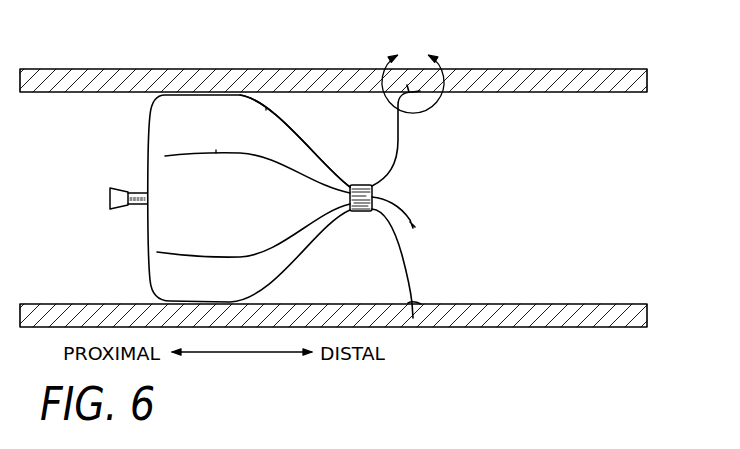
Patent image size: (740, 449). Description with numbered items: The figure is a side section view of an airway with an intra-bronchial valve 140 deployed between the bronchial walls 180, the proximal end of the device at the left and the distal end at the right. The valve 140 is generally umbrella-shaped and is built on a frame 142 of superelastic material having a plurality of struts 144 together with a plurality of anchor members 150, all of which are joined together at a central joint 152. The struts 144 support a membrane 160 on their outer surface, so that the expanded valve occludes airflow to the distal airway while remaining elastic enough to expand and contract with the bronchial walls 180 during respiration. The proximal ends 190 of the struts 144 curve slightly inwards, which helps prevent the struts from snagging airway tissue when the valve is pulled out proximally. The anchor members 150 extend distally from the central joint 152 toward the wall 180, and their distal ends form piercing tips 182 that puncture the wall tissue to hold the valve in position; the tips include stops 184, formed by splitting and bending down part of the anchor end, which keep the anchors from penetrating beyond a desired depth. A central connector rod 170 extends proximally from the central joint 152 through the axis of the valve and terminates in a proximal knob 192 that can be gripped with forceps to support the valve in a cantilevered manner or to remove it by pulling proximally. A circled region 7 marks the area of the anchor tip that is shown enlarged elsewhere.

The intra-bronchial valve 140 is at (146, 108).
The frame 142 is at (312, 113).
The struts 144 is at (267, 110).
The anchor members 150 is at (406, 145).
The central joint 152 is at (358, 183).
The membrane 160 is at (231, 208).
The connector rod 170 is at (128, 215).
The bronchial wall 180 is at (640, 80).
The piercing tips 182 is at (421, 220).
The stops 184 is at (416, 303).
The proximal strut ends 190 is at (163, 152).
The proximal knob 192 is at (118, 187).
The detail view circle 7 is at (413, 76).